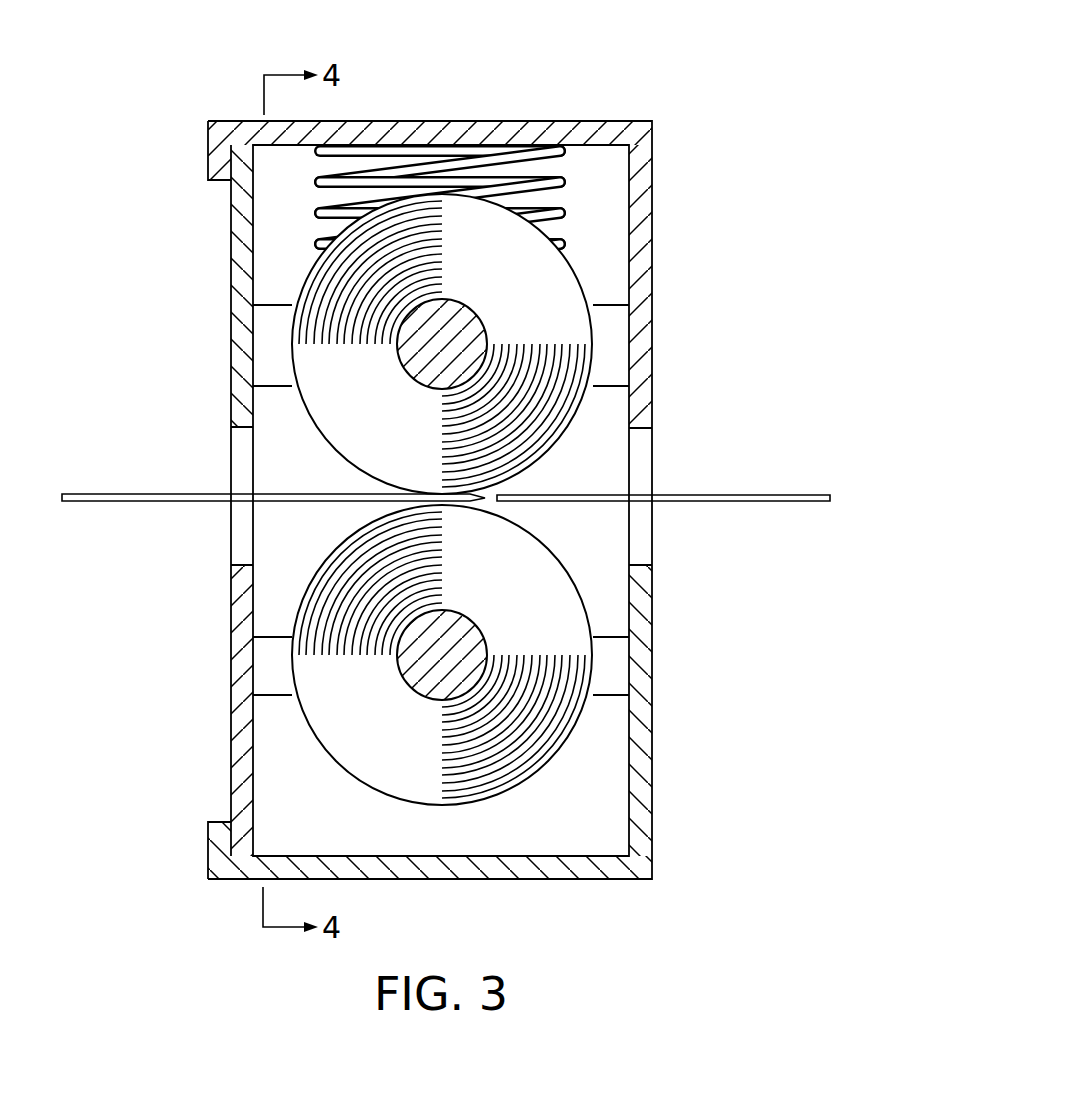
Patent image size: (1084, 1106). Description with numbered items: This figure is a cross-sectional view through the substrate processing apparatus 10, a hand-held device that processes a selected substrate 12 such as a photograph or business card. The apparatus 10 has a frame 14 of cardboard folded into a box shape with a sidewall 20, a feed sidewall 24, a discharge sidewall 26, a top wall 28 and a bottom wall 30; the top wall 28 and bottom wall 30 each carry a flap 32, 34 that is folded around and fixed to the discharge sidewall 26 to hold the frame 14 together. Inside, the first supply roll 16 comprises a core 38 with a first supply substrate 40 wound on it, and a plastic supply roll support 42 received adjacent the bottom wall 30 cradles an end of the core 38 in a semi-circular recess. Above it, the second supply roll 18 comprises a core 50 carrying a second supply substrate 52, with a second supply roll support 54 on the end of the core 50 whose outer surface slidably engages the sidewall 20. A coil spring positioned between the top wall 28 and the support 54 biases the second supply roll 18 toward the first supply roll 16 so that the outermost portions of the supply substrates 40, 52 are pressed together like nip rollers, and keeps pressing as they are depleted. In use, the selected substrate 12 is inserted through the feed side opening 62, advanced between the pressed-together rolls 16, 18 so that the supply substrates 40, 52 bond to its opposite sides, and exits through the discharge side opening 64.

The substrate processing apparatus 10 is at (692, 83).
The selected substrate 12 is at (712, 477).
The frame 14 is at (688, 178).
The first supply roll 16 is at (593, 695).
The second supply roll 18 is at (593, 322).
The sidewall 20 is at (615, 417).
The feed sidewall 24 is at (643, 258).
The discharge sidewall 26 is at (237, 315).
The top wall 28 is at (472, 128).
The bottom wall 30 is at (530, 870).
The flap 32 is at (220, 162).
The flap 34 is at (215, 857).
The core 38 is at (458, 627).
The first supply substrate 40 is at (563, 585).
The supply roll support 42 is at (608, 783).
The core 50 is at (460, 318).
The second supply substrate 52 is at (562, 277).
The second supply roll support 54 is at (617, 358).
The feed side opening 62 is at (645, 460).
The discharge side opening 64 is at (237, 537).